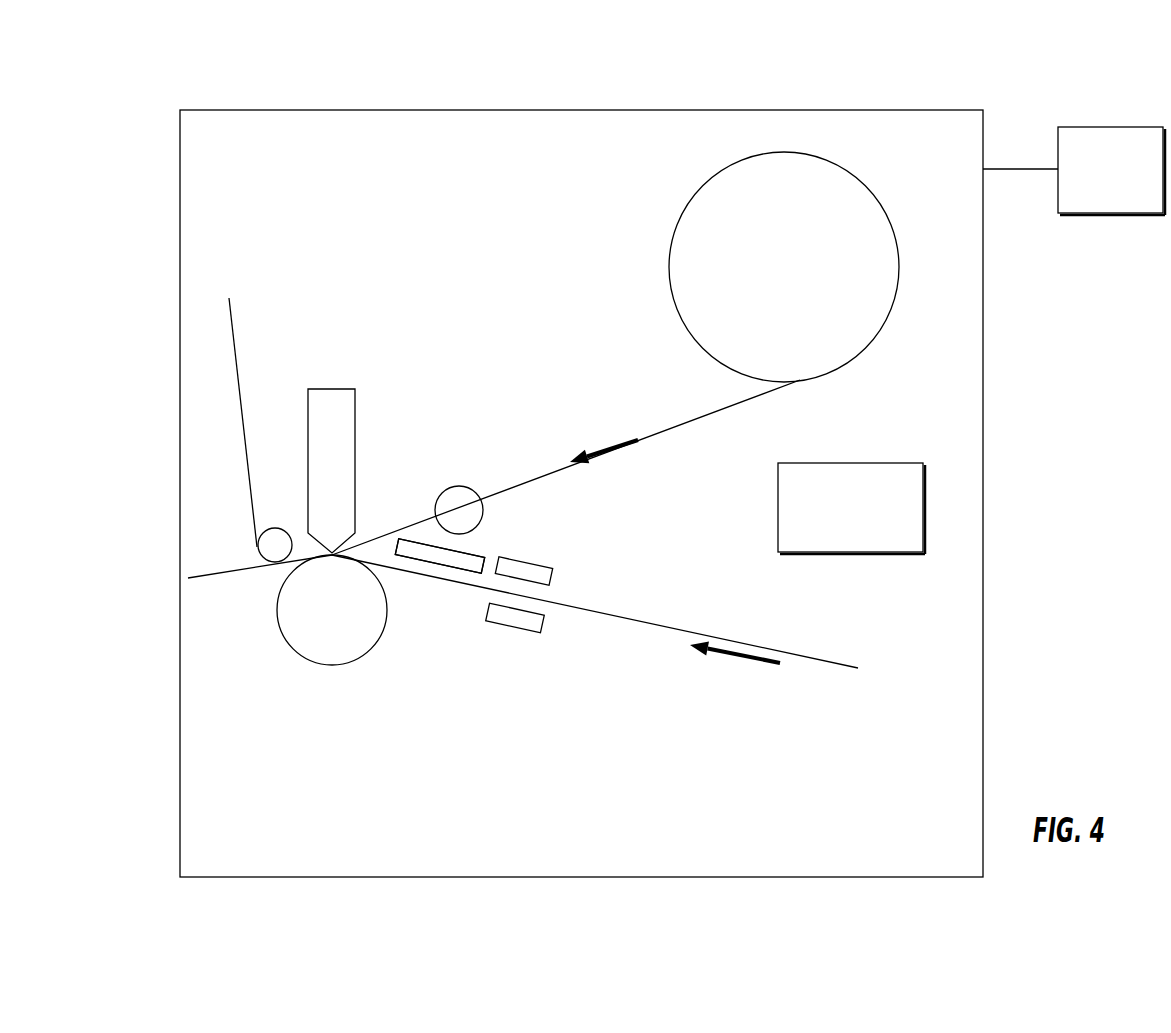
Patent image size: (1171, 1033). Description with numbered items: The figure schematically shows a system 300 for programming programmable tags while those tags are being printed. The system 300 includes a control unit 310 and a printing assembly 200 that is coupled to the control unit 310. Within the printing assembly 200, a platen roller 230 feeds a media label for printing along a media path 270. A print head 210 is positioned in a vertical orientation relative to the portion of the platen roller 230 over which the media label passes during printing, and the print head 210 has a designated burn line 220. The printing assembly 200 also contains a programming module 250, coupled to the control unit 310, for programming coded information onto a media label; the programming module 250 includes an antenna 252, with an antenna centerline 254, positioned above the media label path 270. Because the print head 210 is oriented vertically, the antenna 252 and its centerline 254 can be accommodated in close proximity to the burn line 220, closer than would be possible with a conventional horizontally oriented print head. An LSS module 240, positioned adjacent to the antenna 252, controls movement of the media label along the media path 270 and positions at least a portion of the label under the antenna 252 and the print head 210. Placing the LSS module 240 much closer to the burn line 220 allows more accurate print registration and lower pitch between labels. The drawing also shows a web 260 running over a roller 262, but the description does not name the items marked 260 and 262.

The printing assembly 200 is at (230, 127).
The print head 210 is at (331, 388).
The burn line 220 is at (332, 555).
The platen roller 230 is at (288, 640).
The LSS module 240 is at (521, 650).
The programming module 250 is at (868, 463).
The antenna 252 is at (477, 542).
The antenna centerline 254 is at (437, 582).
The media web 260 is at (602, 442).
The roller 262 is at (448, 488).
The media path 270 is at (780, 663).
The system 300 is at (654, 78).
The control unit 310 is at (1093, 127).